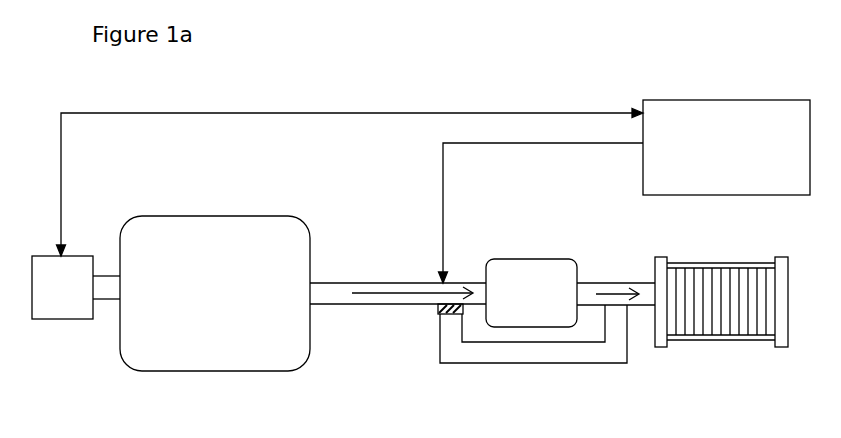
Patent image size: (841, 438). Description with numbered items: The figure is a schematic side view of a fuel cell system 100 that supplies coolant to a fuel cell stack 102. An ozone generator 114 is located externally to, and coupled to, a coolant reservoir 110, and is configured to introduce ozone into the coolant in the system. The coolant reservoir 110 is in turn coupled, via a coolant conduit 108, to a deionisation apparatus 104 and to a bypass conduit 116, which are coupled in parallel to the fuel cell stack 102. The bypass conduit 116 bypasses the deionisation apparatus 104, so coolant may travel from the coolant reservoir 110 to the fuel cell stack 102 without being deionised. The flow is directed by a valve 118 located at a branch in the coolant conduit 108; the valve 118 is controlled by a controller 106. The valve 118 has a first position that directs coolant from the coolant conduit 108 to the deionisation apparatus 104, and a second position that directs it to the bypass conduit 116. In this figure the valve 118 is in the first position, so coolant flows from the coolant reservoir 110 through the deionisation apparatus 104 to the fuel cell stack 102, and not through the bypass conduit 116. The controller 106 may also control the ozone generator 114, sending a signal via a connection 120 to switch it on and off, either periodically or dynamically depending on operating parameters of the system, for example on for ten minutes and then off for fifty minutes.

The fuel cell system 100 is at (376, 83).
The fuel cell stack 102 is at (720, 338).
The deionisation apparatus 104 is at (535, 258).
The controller 106 is at (707, 99).
The coolant conduit 108 is at (322, 282).
The coolant reservoir 110 is at (282, 354).
The ozone generator 114 is at (78, 313).
The bypass conduit 116 is at (530, 355).
The valve 118 is at (440, 315).
The connection 120 is at (108, 112).